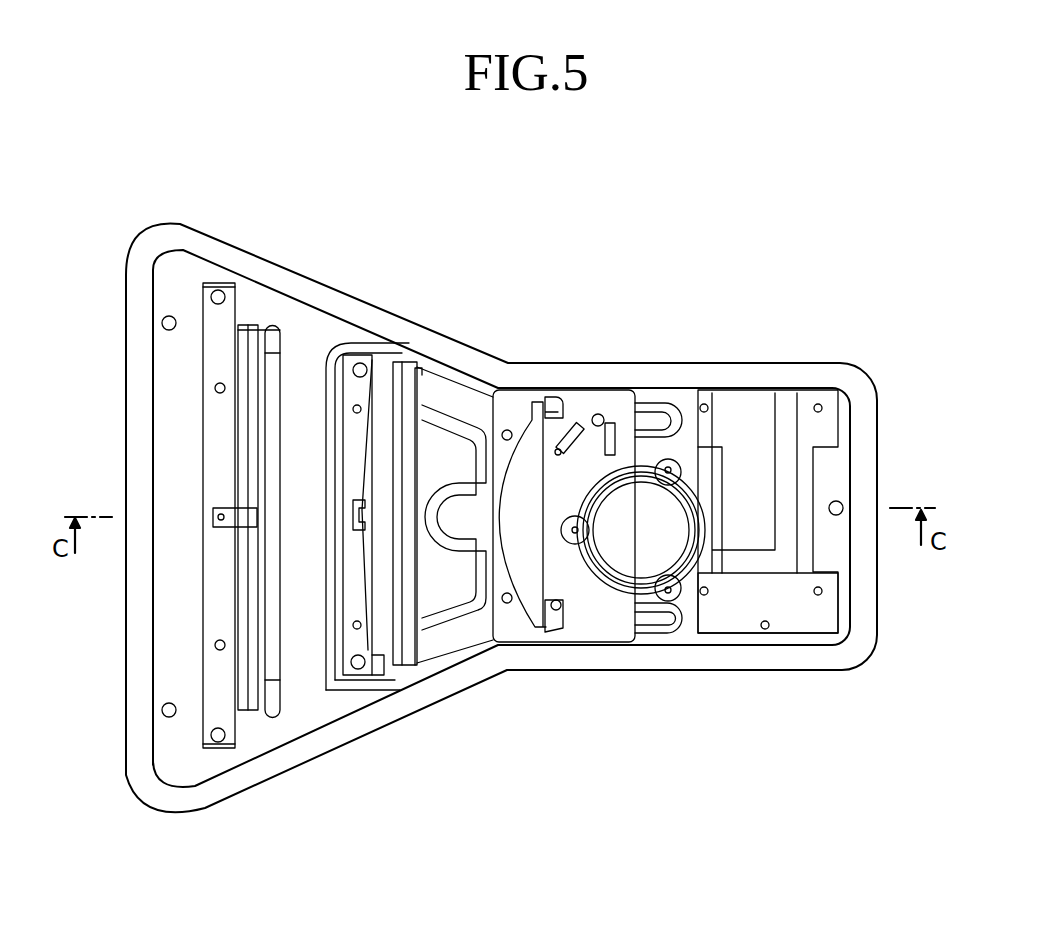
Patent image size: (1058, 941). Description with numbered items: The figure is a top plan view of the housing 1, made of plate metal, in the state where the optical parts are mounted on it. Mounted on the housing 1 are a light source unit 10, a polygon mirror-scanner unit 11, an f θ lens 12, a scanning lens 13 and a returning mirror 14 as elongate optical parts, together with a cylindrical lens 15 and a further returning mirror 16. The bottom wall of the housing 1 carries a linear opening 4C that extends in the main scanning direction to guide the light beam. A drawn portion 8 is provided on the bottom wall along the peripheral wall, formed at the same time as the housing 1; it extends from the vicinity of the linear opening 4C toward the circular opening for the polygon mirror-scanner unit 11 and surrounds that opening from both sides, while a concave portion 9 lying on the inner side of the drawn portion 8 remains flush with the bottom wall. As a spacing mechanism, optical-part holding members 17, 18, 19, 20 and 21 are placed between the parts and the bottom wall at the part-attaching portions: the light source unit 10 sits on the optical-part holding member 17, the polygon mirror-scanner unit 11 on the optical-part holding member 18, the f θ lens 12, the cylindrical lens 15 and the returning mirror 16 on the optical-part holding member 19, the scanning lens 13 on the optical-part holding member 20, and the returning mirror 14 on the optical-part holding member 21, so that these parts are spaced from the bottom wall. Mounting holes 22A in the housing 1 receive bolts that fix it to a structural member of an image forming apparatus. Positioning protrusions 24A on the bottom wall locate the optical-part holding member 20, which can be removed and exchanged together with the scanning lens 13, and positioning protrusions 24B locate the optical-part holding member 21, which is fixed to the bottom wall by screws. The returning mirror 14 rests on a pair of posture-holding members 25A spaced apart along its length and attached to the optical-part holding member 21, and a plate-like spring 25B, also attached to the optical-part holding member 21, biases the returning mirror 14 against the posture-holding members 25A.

The housing 1 is at (723, 358).
The linear opening 4C is at (273, 575).
The drawn portion 8 is at (472, 620).
The concave portion 9 is at (443, 598).
The light source unit 10 is at (780, 560).
The polygon mirror-scanner unit 11 is at (628, 566).
The f θ lens 12 is at (537, 395).
The scanning lens 13 is at (392, 378).
The returning mirror 14 is at (253, 335).
The cylindrical lens 15 is at (608, 420).
The returning mirror 16 is at (577, 428).
The optical-part holding member 17 is at (735, 612).
The optical-part holding member 18 is at (667, 466).
The optical-part holding member 19 is at (517, 632).
The optical-part holding member 20 is at (363, 677).
The optical-part holding member 21 is at (213, 712).
The mounting holes 22A is at (162, 323).
The positioning protrusions 24A is at (355, 405).
The positioning protrusions 24B is at (215, 389).
The posture-holding members 25A is at (277, 345).
The plate-like spring 25B is at (255, 518).